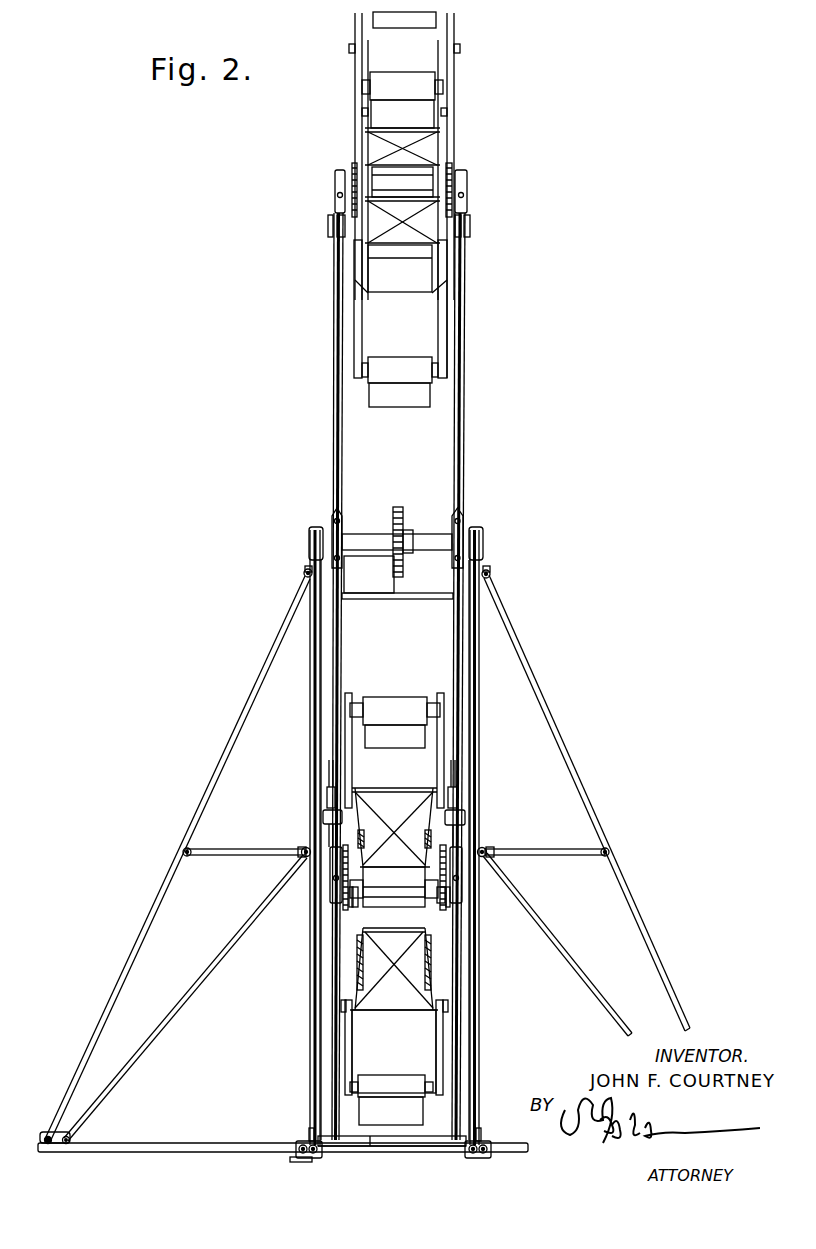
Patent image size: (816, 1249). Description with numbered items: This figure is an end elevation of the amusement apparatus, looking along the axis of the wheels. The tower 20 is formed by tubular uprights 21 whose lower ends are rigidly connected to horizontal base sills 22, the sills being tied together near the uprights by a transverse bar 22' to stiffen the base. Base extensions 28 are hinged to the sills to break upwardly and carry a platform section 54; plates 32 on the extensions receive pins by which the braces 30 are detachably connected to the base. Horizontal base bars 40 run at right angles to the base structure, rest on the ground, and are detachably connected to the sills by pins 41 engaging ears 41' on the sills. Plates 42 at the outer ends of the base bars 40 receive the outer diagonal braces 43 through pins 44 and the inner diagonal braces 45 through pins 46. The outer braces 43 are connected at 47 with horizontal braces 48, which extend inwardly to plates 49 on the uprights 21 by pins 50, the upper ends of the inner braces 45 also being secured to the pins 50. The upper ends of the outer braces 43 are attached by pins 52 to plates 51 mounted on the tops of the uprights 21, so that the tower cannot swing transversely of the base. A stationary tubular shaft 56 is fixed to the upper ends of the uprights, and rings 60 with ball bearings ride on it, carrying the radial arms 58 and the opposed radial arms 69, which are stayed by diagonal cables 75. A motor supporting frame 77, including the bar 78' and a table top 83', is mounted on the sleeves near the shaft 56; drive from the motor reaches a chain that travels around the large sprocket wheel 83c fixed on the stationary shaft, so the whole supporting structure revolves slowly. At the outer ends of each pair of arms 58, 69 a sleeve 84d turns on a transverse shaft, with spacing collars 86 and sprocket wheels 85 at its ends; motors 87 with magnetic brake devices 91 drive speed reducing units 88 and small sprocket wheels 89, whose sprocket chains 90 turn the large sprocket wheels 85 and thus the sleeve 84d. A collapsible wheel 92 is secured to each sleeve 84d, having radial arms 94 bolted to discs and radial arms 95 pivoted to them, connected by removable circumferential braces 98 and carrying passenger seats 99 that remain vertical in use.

The tower 20 is at (483, 702).
The uprights 21 is at (310, 1000).
The base sills 22 is at (395, 1162).
The transverse bar 22' is at (392, 1164).
The base extensions 28 is at (310, 1157).
The braces 30 is at (316, 973).
The plates 32 is at (310, 1138).
The base bars 40 is at (218, 1150).
The pins 41 is at (384, 1137).
The ears 41' is at (294, 1169).
The plates 42 is at (58, 1152).
The outer diagonal braces 43 is at (153, 910).
The pins 44 is at (46, 1138).
The inner diagonal braces 45 is at (258, 918).
The pins 46 is at (72, 1141).
The connection point 47 is at (190, 848).
The horizontal braces 48 is at (231, 852).
The plates 49 is at (301, 846).
The pins 50 is at (303, 849).
The plates 51 is at (303, 571).
The pins 52 is at (305, 577).
The platform section 54 is at (403, 1152).
The horizontal stationary shaft 56 is at (429, 534).
The radial arms 58 is at (342, 668).
The rings 60 is at (336, 518).
The radial arms 69 is at (334, 446).
The diagonal cables 75 is at (337, 423).
The motor supporting frame 77 is at (414, 552).
The second bar 78' is at (401, 608).
The table top 83' is at (370, 574).
The large sprocket wheel 83c is at (405, 512).
The sleeve 84d is at (425, 182).
The sprocket wheels 85 is at (353, 170).
The spacing collars 86 is at (343, 906).
The motors 87 is at (322, 816).
The speed reducing units 88 is at (330, 862).
The small sprocket wheels 89 is at (470, 228).
The sprocket chains 90 is at (338, 207).
The magnetic brake devices 91 is at (326, 796).
The wheel 92 is at (456, 136).
The radial arms 94 is at (405, 308).
The radial arms 95 is at (450, 348).
The circumferential braces 98 is at (455, 95).
The passenger seats 99 is at (408, 85).